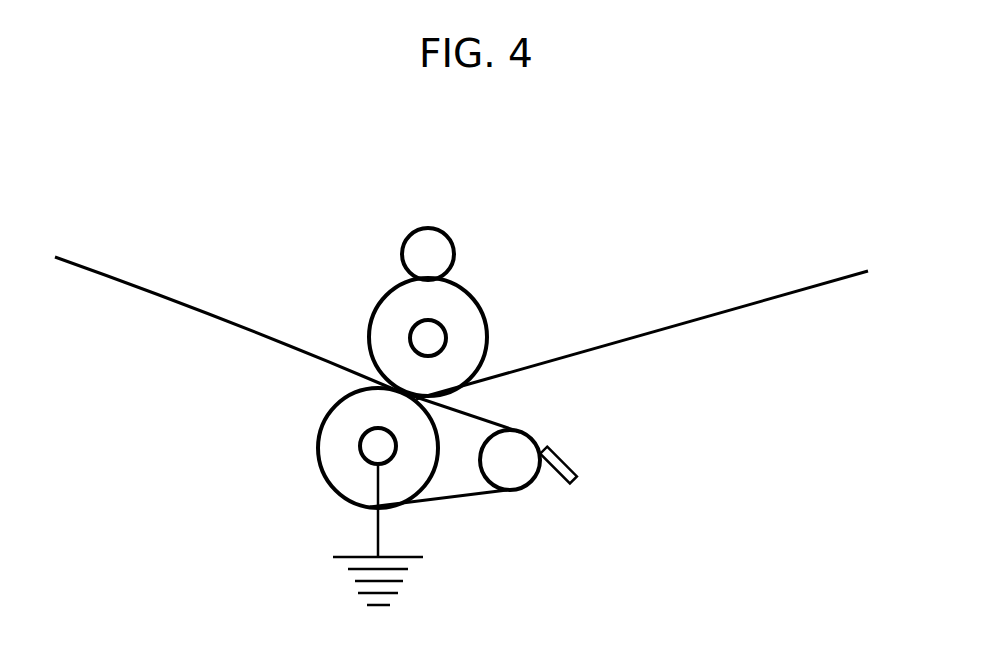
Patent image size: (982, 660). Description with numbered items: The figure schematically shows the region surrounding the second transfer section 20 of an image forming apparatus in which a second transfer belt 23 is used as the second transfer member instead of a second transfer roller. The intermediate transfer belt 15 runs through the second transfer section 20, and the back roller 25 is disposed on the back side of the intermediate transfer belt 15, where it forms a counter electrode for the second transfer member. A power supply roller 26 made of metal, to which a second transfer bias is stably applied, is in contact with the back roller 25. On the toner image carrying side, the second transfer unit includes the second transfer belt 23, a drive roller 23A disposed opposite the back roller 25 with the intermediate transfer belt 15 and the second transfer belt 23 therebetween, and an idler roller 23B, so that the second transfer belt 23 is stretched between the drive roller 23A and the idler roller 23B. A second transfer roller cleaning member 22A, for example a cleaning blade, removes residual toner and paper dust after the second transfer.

The intermediate transfer belt 15 is at (785, 297).
The second transfer section 20 is at (520, 327).
The second transfer roller cleaning member 22A is at (568, 458).
The second transfer belt 23 is at (447, 503).
The drive roller 23A is at (347, 470).
The idler roller 23B is at (508, 460).
The back roller 25 is at (462, 303).
The power supply roller 26 is at (442, 230).